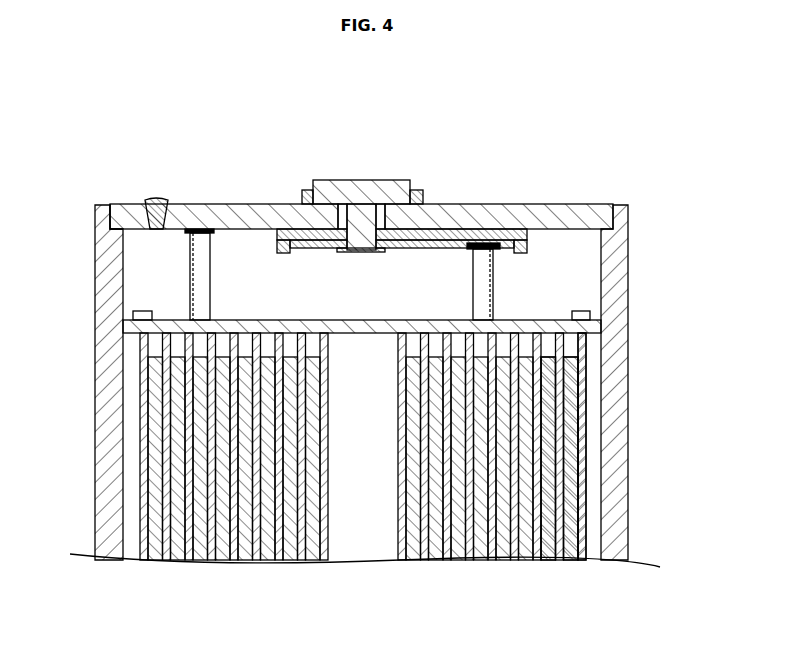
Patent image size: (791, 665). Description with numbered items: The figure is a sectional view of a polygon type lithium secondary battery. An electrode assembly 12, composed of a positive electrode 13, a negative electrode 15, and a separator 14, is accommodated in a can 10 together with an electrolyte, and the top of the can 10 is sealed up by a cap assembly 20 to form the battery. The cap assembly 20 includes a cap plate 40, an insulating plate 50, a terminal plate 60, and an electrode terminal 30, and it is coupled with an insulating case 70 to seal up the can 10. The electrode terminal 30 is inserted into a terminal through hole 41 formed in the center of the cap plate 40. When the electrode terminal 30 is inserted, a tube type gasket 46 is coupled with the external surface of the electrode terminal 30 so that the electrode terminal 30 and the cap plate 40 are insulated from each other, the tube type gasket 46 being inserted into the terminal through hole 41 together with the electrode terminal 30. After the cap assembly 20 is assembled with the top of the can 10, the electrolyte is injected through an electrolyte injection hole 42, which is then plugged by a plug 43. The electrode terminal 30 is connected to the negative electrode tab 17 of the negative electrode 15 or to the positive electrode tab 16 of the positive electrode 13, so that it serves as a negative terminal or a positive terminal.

The can 10 is at (612, 466).
The electrode assembly 12 is at (605, 395).
The positive electrode 13 is at (565, 560).
The separator 14 is at (579, 560).
The negative electrode 15 is at (547, 560).
The positive electrode tab 16 is at (197, 256).
The negative electrode tab 17 is at (483, 290).
The cap assembly 20 is at (491, 171).
The electrode terminal 30 is at (358, 180).
The cap plate 40 is at (545, 205).
The terminal through hole 41 is at (303, 192).
The electrolyte injection hole 42 is at (128, 205).
The plug 43 is at (152, 200).
The tube type gasket 46 is at (418, 190).
The insulating plate 50 is at (523, 262).
The terminal plate 60 is at (425, 249).
The insulating case 70 is at (175, 318).